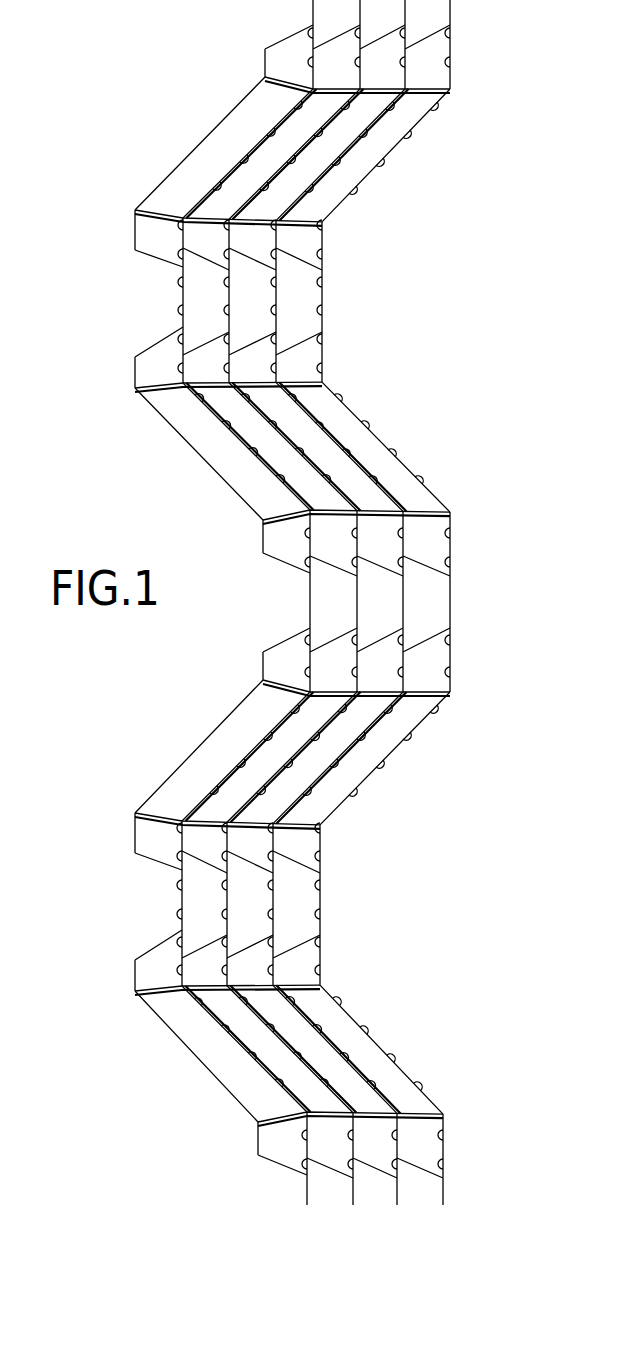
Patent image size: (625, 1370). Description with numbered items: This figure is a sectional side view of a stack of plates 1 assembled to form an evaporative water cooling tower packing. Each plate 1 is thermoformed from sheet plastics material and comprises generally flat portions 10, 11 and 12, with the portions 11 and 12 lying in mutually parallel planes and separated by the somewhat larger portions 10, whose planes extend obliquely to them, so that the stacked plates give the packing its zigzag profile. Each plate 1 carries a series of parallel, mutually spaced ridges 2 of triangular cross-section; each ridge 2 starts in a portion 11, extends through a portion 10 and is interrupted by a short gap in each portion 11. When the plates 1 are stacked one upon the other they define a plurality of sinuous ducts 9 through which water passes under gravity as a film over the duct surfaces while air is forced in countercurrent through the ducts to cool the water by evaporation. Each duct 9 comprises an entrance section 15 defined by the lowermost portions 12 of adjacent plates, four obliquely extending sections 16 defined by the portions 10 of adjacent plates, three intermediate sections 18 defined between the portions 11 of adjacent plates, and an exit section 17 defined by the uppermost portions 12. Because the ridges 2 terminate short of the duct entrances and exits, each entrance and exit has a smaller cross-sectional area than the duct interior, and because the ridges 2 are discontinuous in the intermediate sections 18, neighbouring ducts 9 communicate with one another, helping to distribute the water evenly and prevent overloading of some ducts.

The plate 1 is at (303, 602).
The ridge 2 is at (135, 236).
The sinuous duct 9 is at (330, 403).
The oblique portion 10 is at (376, 181).
The intermediate flat portion 11 is at (338, 296).
The end flat portion 12 is at (458, 59).
The entrance section 15 is at (430, 1133).
The obliquely extending section 16 is at (372, 758).
The exit section 17 is at (278, 72).
The intermediate section 18 is at (437, 588).